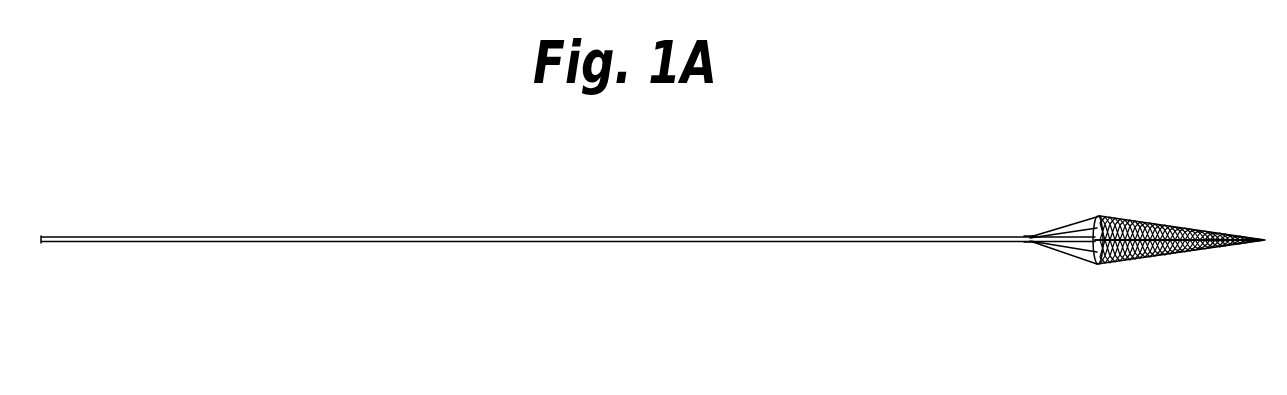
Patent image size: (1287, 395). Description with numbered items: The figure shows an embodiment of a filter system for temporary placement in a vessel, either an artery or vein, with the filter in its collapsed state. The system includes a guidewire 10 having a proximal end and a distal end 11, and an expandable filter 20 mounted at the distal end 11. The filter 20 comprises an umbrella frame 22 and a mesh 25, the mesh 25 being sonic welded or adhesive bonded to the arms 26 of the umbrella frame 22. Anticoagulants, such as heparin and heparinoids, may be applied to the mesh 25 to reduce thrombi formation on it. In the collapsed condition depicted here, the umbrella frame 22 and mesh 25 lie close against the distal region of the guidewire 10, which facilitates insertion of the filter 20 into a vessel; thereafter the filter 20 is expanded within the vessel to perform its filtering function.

The guidewire 10 is at (483, 230).
The distal end 11 is at (1021, 228).
The umbrella frame 22 is at (1070, 208).
The mesh 25 is at (1177, 228).
The arms 26 is at (1079, 264).
The expandable filter 20 is at (1181, 244).